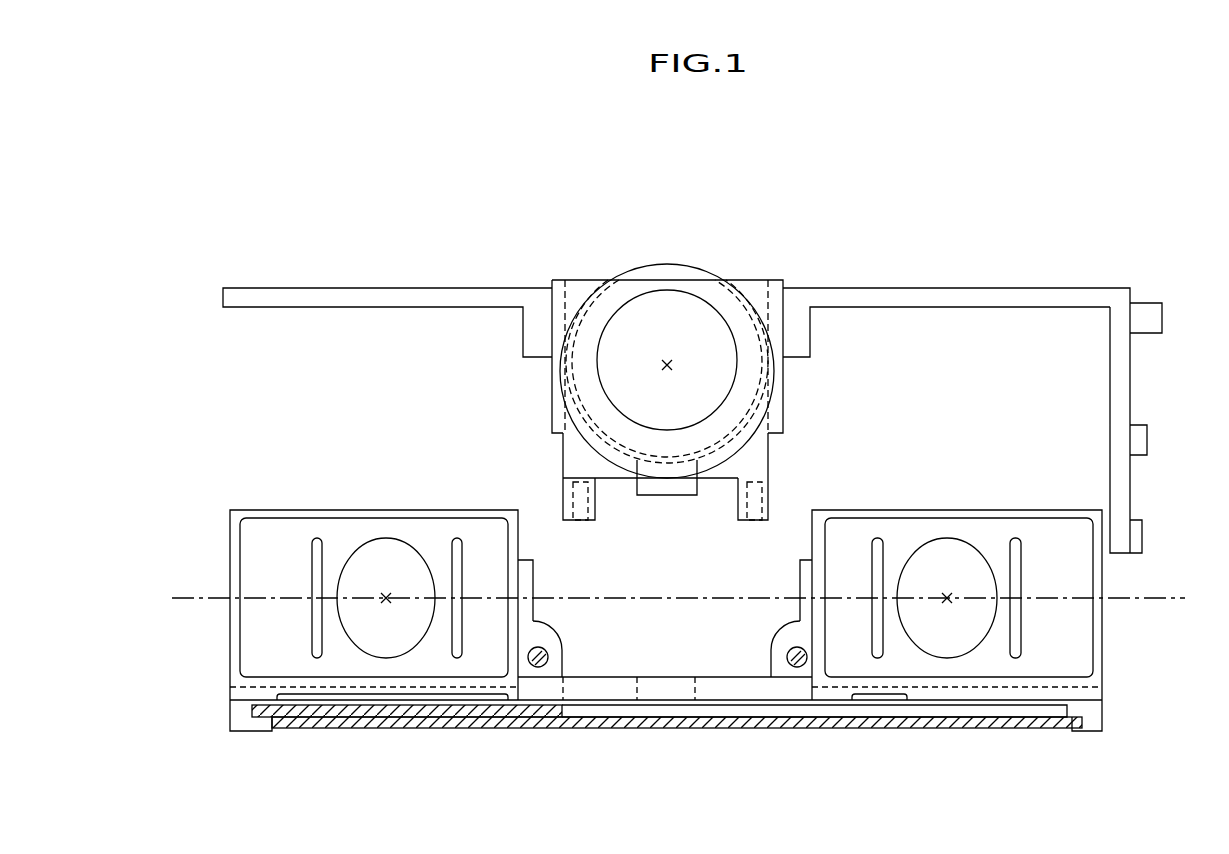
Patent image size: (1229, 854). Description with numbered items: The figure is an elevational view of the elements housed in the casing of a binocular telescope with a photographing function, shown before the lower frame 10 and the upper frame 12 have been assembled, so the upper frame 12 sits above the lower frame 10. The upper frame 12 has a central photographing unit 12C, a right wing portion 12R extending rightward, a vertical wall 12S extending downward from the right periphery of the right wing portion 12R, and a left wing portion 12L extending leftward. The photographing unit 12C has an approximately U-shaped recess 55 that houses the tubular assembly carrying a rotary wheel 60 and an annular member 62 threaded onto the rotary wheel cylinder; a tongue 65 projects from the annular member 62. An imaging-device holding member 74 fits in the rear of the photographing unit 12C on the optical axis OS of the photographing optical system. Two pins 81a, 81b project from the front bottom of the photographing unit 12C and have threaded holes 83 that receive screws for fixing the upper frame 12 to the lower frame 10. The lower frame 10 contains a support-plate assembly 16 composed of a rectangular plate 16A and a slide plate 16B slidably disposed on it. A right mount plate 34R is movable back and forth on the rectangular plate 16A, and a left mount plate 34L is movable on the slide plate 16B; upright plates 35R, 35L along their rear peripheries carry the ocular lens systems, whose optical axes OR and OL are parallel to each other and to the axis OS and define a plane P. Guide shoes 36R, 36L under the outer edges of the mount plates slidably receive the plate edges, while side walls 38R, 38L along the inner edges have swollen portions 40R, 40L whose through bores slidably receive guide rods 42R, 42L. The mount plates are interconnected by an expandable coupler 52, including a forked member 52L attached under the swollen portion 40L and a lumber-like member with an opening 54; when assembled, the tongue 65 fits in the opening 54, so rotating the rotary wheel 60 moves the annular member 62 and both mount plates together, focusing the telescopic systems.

The lower frame 10 is at (262, 503).
The upper frame 12 is at (338, 278).
The left wing portion 12L is at (358, 312).
The right wing portion 12R is at (957, 312).
The photographing unit 12C is at (733, 277).
The vertical wall 12S is at (1136, 378).
The rotary wheel 60 is at (667, 262).
The annular member 62 is at (597, 298).
The recess 55 is at (768, 280).
The imaging-device holding member 74 is at (655, 348).
The optical axis of the photographing optical system OS is at (667, 370).
The pin 81a is at (758, 470).
The pin 81b is at (577, 470).
The threaded hole 83 is at (580, 522).
The tongue 65 is at (667, 497).
The plane P is at (195, 602).
The upright plate 35L is at (232, 520).
The upright plate 35R is at (1105, 614).
The optical axis of the left telescopic optical system OL is at (386, 603).
The optical axis of the right telescopic optical system OR is at (947, 603).
The left mount plate 34L is at (232, 690).
The right mount plate 34R is at (1100, 693).
The guide shoe 36L is at (232, 715).
The guide shoe 36R is at (1095, 714).
The side wall 38L is at (535, 580).
The side wall 38R is at (800, 583).
The swollen portion 40L is at (560, 656).
The swollen portion 40R is at (775, 648).
The guide rod 42L is at (538, 668).
The guide rod 42R is at (797, 668).
The expandable coupler 52 is at (671, 675).
The forked member 52L is at (602, 690).
The opening 54 is at (637, 690).
The support-plate assembly 16 is at (667, 751).
The rectangular plate 16A is at (920, 730).
The slide plate 16B is at (428, 708).